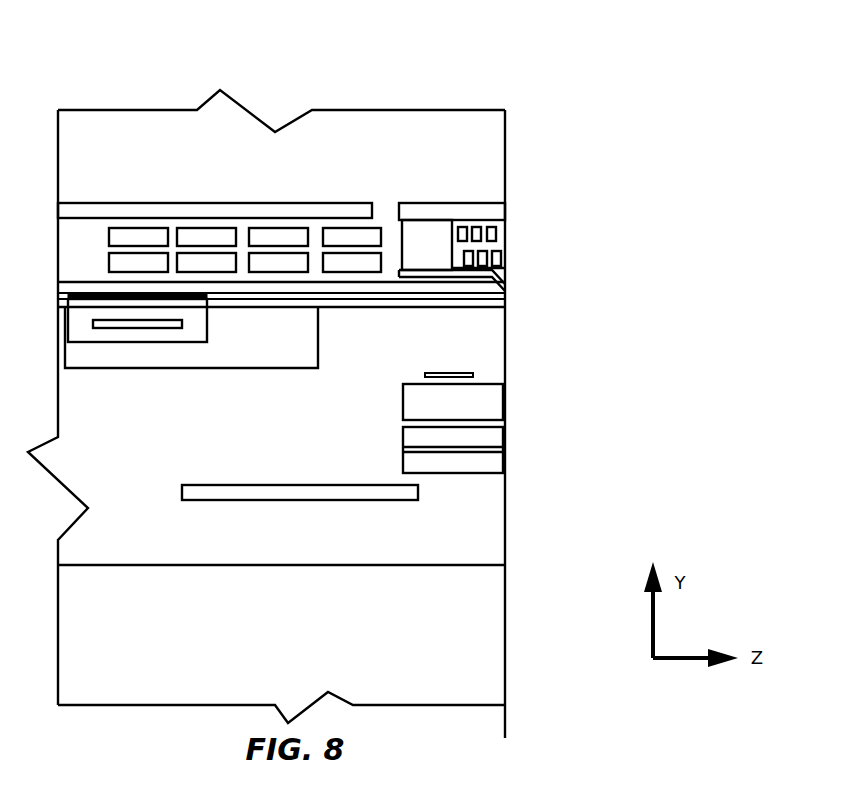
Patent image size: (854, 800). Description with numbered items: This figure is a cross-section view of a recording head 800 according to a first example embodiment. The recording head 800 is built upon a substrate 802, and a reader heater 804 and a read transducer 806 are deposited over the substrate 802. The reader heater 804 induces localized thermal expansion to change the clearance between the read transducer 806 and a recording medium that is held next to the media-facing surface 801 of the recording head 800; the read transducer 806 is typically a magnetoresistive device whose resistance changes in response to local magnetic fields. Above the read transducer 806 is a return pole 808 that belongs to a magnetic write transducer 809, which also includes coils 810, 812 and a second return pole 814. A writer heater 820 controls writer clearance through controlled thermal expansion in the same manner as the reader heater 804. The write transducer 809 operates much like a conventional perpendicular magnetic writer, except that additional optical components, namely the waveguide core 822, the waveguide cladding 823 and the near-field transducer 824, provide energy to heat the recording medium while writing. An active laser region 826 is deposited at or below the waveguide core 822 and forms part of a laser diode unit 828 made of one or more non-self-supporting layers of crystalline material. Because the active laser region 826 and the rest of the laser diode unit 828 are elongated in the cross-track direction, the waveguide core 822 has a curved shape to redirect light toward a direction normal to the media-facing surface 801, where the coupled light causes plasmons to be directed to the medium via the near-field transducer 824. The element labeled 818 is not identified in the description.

The recording head 800 is at (438, 62).
The media-facing surface 801 is at (505, 730).
The substrate 802 is at (452, 705).
The reader heater 804 is at (300, 522).
The read transducer 806 is at (498, 457).
The return pole 808 is at (498, 409).
The write transducer 809 is at (625, 251).
The coil 810 is at (295, 228).
The coil 812 is at (505, 258).
The second return pole 814 is at (505, 208).
The angled shelf 818 is at (505, 282).
The writer heater 820 is at (473, 375).
The waveguide core 822 is at (367, 299).
The waveguide cladding 823 is at (436, 293).
The near-field transducer 824 is at (505, 292).
The active laser region 826 is at (137, 342).
The laser diode unit 828 is at (232, 369).